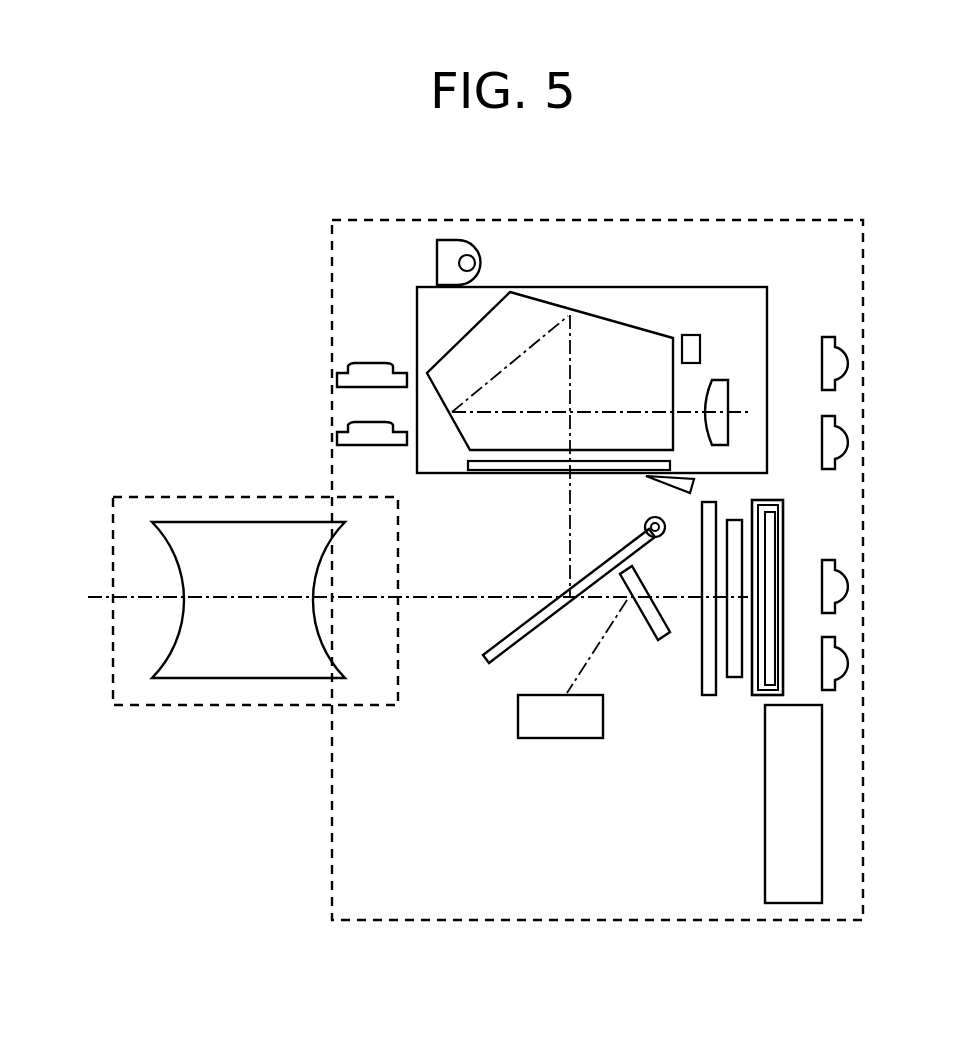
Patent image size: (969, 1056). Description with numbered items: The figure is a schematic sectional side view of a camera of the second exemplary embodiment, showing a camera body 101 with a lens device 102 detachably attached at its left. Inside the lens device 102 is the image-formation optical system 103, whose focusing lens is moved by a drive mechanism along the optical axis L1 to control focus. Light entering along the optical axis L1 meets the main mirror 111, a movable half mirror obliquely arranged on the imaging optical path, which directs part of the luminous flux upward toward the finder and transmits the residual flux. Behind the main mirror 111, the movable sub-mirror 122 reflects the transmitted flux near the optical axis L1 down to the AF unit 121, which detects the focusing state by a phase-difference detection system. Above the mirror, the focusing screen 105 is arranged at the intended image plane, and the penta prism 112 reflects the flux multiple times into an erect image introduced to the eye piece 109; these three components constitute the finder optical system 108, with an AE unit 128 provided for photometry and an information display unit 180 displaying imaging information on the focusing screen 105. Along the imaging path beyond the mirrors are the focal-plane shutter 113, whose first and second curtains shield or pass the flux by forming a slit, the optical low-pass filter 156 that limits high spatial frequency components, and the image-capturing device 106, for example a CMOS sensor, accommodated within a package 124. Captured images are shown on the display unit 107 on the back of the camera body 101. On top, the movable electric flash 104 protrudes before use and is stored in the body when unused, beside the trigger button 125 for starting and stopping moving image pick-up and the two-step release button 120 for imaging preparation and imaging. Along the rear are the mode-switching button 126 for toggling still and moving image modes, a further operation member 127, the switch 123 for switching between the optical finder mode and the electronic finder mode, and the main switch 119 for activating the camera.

The camera body 101 is at (563, 920).
The lens device 102 is at (183, 497).
The image-formation optical system 103 is at (175, 670).
The optical axis L1 is at (152, 597).
The movable electric flash 104 is at (437, 262).
The focusing screen 105 is at (516, 472).
The image-capturing device 106 is at (778, 513).
The display unit 107 is at (765, 815).
The finder optical system 108 is at (745, 287).
The eye piece 109 is at (718, 380).
The main mirror 111 is at (486, 660).
The penta prism 112 is at (628, 333).
The focal-plane shutter 113 is at (708, 698).
The main switch 119 is at (850, 663).
The release button 120 is at (360, 422).
The AF unit 121 is at (568, 739).
The sub-mirror 122 is at (641, 620).
The switch for switching a finder mode 123 is at (850, 586).
The package 124 is at (757, 500).
The trigger button 125 is at (360, 363).
The mode-switching button 126 is at (850, 363).
The connector 127 is at (850, 442).
The AE unit 128 is at (690, 335).
The optical low-pass filter 156 is at (733, 679).
The information display unit 180 is at (653, 480).